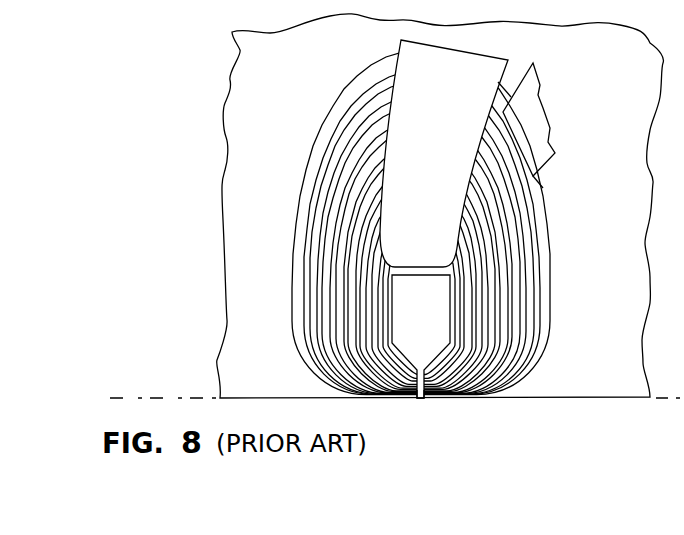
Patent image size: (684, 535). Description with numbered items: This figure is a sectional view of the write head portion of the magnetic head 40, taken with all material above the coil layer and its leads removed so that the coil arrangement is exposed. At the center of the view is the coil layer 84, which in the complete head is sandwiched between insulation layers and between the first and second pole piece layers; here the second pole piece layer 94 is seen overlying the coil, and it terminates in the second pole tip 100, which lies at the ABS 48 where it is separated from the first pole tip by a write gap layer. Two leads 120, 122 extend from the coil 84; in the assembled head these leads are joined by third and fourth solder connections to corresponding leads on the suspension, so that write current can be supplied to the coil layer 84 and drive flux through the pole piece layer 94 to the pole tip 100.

The magnetic head 40 is at (566, 206).
The coil layer 84 is at (523, 297).
The lead 120 is at (445, 152).
The second pole piece layer 94 is at (432, 325).
The lead 122 is at (545, 112).
The air bearing surface (ABS) 48 is at (163, 398).
The second pole tip 100 is at (421, 398).